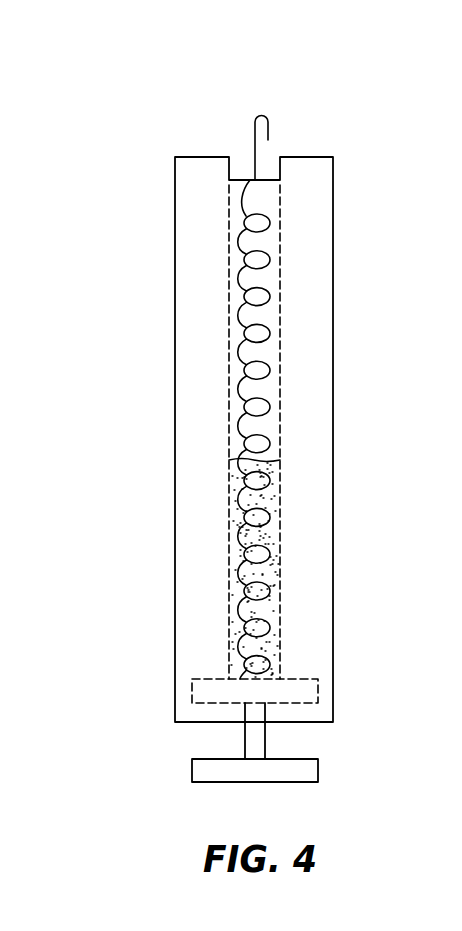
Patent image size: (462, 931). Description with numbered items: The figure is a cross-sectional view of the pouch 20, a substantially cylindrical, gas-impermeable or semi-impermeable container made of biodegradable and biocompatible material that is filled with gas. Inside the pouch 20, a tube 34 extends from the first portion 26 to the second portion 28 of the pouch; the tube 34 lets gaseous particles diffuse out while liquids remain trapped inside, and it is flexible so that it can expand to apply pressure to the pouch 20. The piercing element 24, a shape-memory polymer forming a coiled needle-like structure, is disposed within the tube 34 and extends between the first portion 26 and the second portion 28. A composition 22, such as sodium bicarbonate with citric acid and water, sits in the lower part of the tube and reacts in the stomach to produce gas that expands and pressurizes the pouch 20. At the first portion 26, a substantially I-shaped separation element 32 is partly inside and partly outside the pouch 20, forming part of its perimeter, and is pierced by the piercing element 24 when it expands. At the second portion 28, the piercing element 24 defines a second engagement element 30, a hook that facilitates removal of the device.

The pouch 20 is at (370, 130).
The composition 22 is at (272, 497).
The piercing element 24 is at (240, 280).
The first portion 26 is at (333, 722).
The second portion 28 is at (175, 157).
The second engagement element 30 is at (256, 118).
The separation element 32 is at (318, 768).
The tube 34 is at (281, 354).